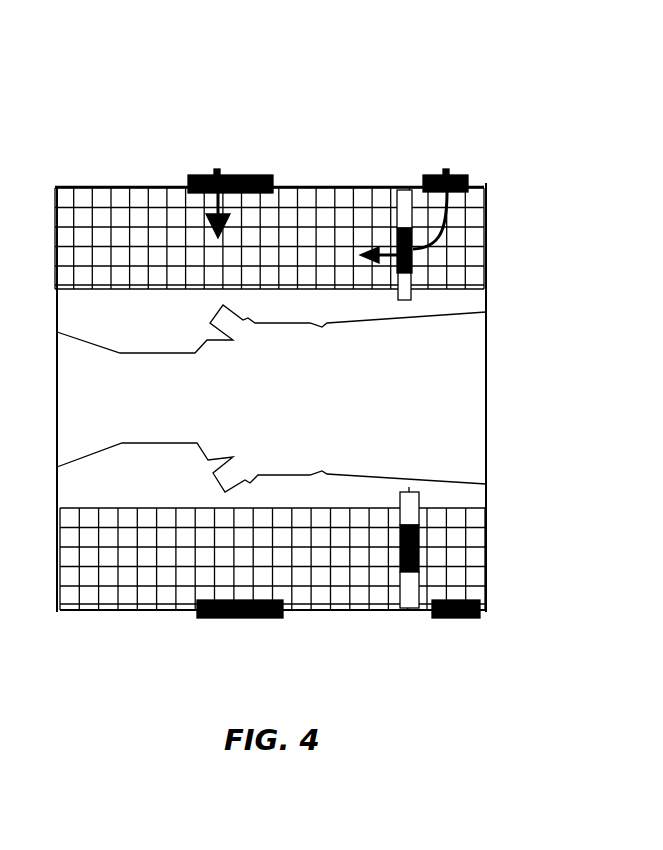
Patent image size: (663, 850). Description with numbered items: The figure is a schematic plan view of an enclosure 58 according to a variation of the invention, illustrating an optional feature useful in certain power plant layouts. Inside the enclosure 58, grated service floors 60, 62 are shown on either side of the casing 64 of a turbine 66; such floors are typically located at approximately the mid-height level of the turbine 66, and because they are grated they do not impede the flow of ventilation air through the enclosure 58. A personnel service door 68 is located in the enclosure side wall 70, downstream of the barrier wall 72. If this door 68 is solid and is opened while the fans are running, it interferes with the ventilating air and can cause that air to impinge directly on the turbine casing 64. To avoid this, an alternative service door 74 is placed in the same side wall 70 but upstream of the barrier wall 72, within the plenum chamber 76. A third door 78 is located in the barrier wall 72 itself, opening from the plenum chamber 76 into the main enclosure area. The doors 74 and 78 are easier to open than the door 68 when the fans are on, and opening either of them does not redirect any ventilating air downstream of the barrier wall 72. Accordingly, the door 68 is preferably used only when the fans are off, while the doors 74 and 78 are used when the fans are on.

The enclosure 58 is at (367, 140).
The grated service floor 60 is at (128, 217).
The grated service floor 62 is at (170, 575).
The casing 64 is at (155, 370).
The turbine 66 is at (288, 322).
The personnel service door 68 is at (252, 175).
The enclosure side wall 70 is at (305, 186).
The barrier wall 72 is at (400, 188).
The alternative service door 74 is at (453, 175).
The plenum chamber 76 is at (472, 295).
The third door 78 is at (408, 300).